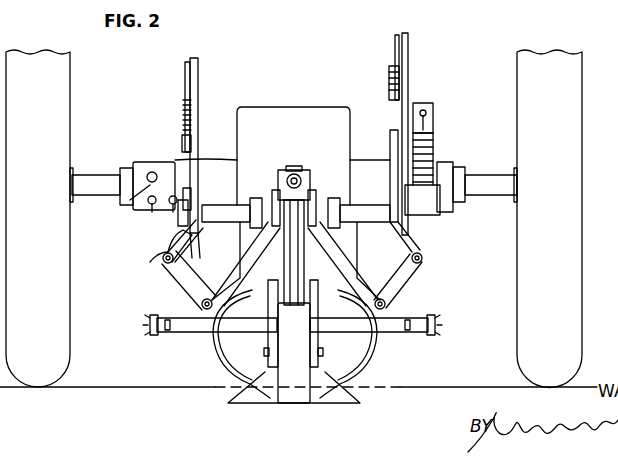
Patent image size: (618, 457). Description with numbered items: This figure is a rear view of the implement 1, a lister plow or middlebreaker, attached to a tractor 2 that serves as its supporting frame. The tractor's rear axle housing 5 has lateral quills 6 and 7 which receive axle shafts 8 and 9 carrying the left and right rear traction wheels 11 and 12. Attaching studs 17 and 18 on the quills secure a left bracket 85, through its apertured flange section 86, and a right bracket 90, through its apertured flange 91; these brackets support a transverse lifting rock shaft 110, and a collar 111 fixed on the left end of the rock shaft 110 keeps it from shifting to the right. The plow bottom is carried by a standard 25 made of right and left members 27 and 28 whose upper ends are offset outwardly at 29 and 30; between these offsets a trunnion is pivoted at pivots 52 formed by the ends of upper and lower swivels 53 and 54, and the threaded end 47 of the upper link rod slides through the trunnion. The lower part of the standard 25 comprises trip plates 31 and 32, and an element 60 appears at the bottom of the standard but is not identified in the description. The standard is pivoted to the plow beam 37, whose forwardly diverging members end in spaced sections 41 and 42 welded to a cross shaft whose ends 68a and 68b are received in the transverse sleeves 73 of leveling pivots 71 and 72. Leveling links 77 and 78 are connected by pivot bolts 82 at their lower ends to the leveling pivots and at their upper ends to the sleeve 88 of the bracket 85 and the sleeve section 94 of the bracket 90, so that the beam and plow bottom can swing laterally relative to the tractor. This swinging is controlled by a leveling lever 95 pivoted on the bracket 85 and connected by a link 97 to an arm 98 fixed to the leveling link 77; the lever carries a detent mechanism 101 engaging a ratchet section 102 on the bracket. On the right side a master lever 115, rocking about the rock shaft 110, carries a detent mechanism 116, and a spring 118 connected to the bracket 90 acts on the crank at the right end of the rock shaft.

The implement 1 is at (204, 390).
The tractor 2 is at (267, 100).
The rear axle housing 5 is at (316, 120).
The left quill 6 is at (127, 172).
The right quill 7 is at (374, 168).
The left axle shaft 8 is at (93, 184).
The right axle shaft 9 is at (487, 183).
The left hand rear traction wheel 11 is at (68, 78).
The right hand rear traction wheel 12 is at (566, 82).
The left attaching studs 17 is at (150, 184).
The right attaching studs 18 is at (434, 165).
The standard 25 is at (322, 243).
The right hand standard member 27 is at (329, 286).
The left hand standard member 28 is at (265, 288).
The right offset upper end 29 is at (312, 196).
The left offset upper end 30 is at (276, 196).
The right lower standard section 31 is at (296, 264).
The left lower standard section 32 is at (293, 341).
The plow beam 37 is at (227, 271).
The forward beam section 41 is at (404, 290).
The forward beam section 42 is at (202, 296).
The threaded end 47 is at (295, 174).
The trunnion pivots 52 is at (278, 174).
The upper swivel 53 is at (290, 166).
The lower swivel 54 is at (246, 264).
The shoe 60 is at (286, 375).
The left cross shaft end 68a is at (150, 325).
The right cross shaft end 68b is at (438, 323).
The left leveling pivot 71 is at (200, 341).
The right leveling pivot 72 is at (400, 340).
The transverse sleeve 73 is at (175, 325).
The left-hand leveling link 77 is at (170, 286).
The right-hand leveling link 78 is at (428, 271).
The pivot bolts 82 is at (163, 257).
The left bracket 85 is at (190, 198).
The flange section 86 is at (165, 168).
The sleeve 88 is at (162, 254).
The right bracket 90 is at (388, 124).
The apertured flange 91 is at (447, 200).
The sleeve section 94 is at (432, 250).
The leveling lever 95 is at (199, 80).
The link 97 is at (180, 240).
The arm 98 is at (203, 258).
The detent mechanism 101 is at (183, 120).
The ratchet section 102 is at (183, 150).
The lifting rock shaft 110 is at (363, 208).
The collar 111 is at (178, 216).
The master lever 115 is at (409, 48).
The detent mechanism 116 is at (390, 88).
The spring 118 is at (432, 130).